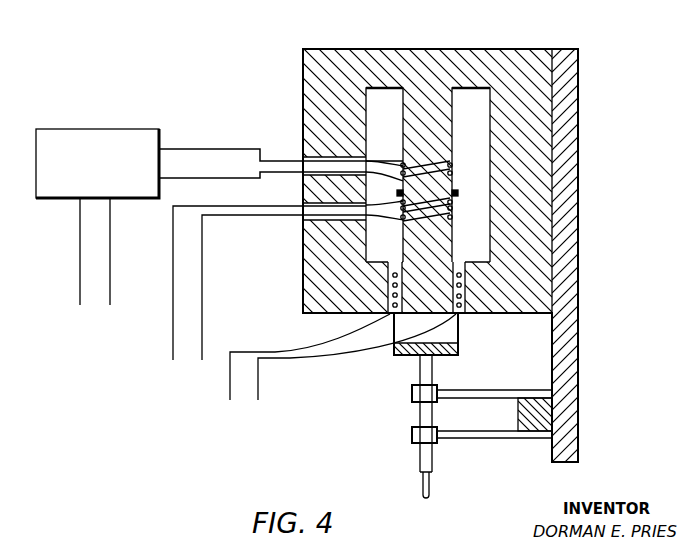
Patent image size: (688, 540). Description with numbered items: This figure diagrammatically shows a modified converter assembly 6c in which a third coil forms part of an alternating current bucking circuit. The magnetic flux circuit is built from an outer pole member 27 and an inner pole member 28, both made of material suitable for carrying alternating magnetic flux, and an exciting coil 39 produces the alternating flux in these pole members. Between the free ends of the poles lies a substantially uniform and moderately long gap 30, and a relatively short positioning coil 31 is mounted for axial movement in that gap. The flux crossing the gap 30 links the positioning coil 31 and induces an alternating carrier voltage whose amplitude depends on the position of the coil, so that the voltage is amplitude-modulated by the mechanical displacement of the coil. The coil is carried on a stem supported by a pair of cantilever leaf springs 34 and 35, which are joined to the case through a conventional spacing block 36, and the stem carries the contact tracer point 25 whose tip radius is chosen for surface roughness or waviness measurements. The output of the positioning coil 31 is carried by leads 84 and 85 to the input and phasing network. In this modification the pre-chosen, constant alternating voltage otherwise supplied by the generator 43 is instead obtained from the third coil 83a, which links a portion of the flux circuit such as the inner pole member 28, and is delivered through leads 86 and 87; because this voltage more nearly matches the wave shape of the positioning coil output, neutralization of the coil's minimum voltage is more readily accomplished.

The outer pole member 27 is at (313, 92).
The inner pole member 28 is at (455, 102).
The converter assembly 6c is at (580, 112).
The exciting coil 39 is at (455, 170).
The third coil 83a is at (455, 220).
The gap 30 is at (463, 268).
The positioning coil 31 is at (463, 313).
The generator 43 is at (52, 129).
The lead 87 is at (173, 325).
The lead 86 is at (202, 325).
The lead 84 is at (230, 390).
The lead 85 is at (258, 385).
The cantilever leaf spring 34 is at (497, 390).
The cantilever leaf spring 35 is at (466, 440).
The spacing block 36 is at (518, 414).
The contact tracer point 25 is at (427, 498).